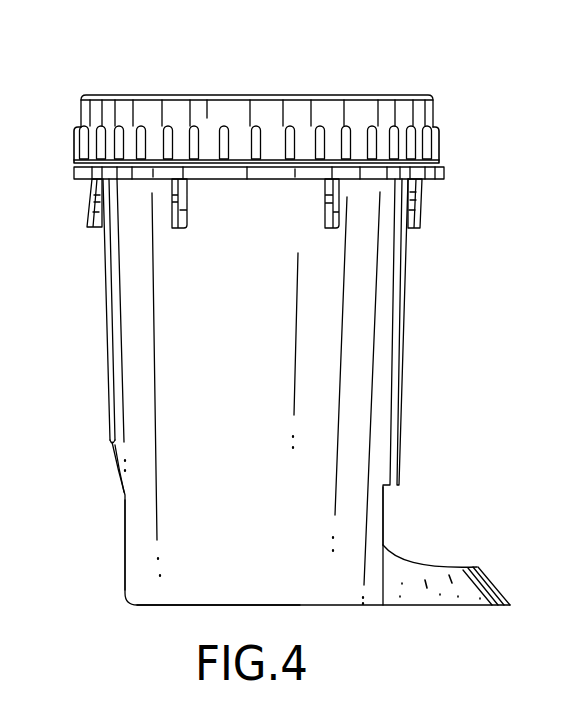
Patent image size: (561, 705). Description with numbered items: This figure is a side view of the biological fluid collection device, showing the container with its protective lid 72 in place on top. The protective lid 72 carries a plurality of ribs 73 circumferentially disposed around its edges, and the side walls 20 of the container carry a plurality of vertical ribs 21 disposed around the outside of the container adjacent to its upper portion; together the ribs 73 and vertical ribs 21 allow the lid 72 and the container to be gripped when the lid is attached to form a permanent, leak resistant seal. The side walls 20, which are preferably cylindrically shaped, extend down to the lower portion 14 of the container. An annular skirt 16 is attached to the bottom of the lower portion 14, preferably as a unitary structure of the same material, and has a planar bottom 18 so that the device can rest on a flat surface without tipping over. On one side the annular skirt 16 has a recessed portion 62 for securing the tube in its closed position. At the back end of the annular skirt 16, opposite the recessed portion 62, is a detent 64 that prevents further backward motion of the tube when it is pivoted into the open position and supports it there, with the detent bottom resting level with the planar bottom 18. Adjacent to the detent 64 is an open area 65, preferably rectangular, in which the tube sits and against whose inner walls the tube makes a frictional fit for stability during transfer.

The lower portion 14 is at (127, 416).
The annular skirt 16 is at (136, 559).
The planar bottom 18 is at (161, 608).
The side walls 20 is at (392, 313).
The vertical ribs 21 is at (424, 207).
The recessed portion 62 is at (123, 503).
The detent 64 is at (490, 580).
The open area 65 is at (385, 515).
The protective lid 72 is at (400, 105).
The ribs 73 is at (441, 147).